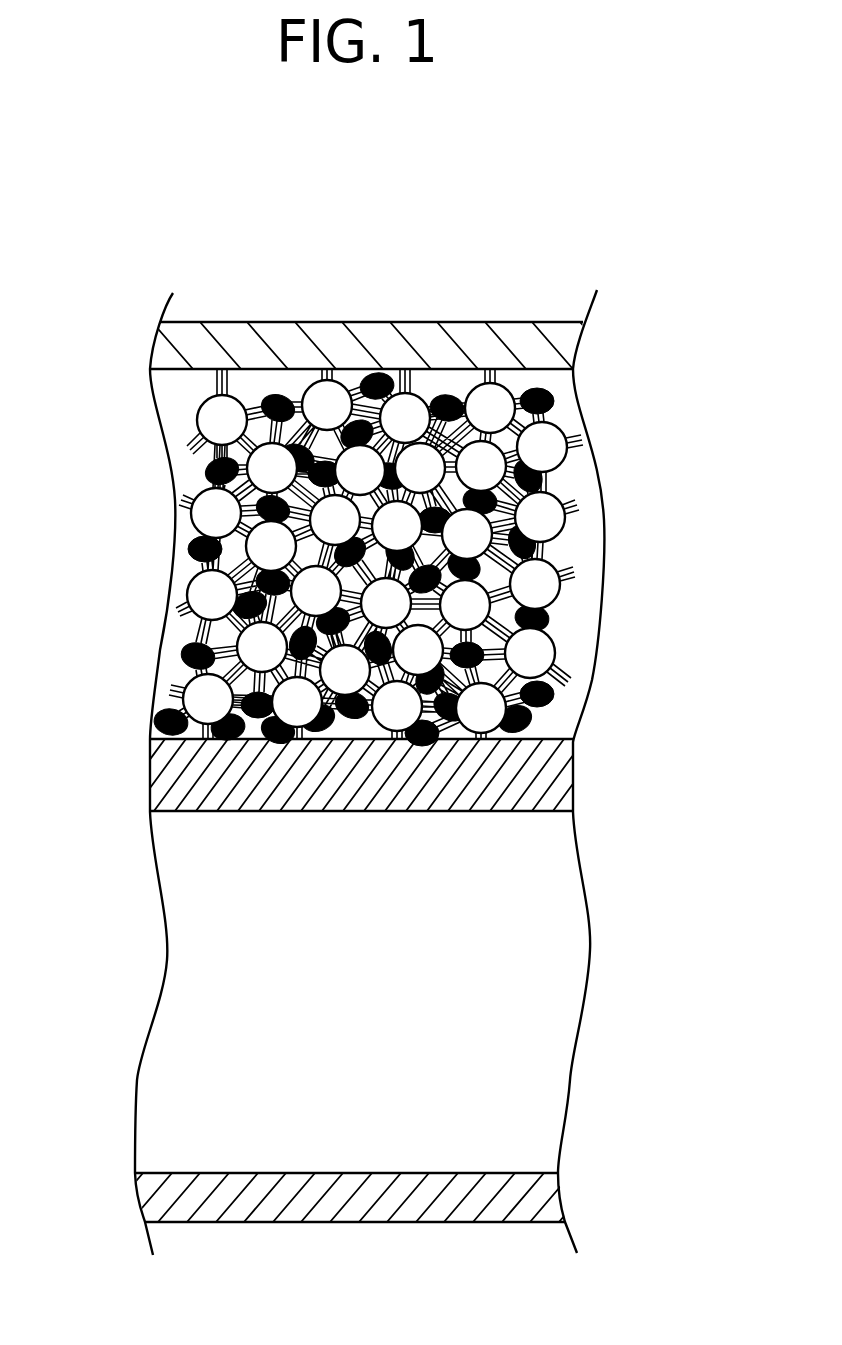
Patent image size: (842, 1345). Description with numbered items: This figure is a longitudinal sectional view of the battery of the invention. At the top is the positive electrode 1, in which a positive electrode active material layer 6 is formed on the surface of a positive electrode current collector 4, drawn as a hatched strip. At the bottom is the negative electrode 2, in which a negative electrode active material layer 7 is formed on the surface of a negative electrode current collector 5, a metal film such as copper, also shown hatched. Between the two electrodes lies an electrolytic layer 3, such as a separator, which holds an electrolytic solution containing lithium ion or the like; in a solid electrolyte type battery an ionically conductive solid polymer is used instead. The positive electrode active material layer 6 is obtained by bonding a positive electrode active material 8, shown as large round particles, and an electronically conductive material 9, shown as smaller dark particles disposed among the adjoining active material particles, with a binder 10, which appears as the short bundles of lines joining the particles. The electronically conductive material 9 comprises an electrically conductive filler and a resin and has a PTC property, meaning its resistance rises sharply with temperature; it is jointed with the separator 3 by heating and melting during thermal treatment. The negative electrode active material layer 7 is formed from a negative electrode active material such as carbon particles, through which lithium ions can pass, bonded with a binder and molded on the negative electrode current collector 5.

The positive electrode 1 is at (100, 322).
The negative electrode 2 is at (105, 815).
The electrolytic layer 3 is at (172, 778).
The positive electrode current collector 4 is at (520, 335).
The negative electrode current collector 5 is at (472, 1205).
The positive electrode active material layer 6 is at (580, 543).
The negative electrode active material layer 7 is at (560, 958).
The positive electrode active material 8 is at (548, 456).
The electronically conductive material 9 is at (548, 705).
The binder 10 is at (560, 396).